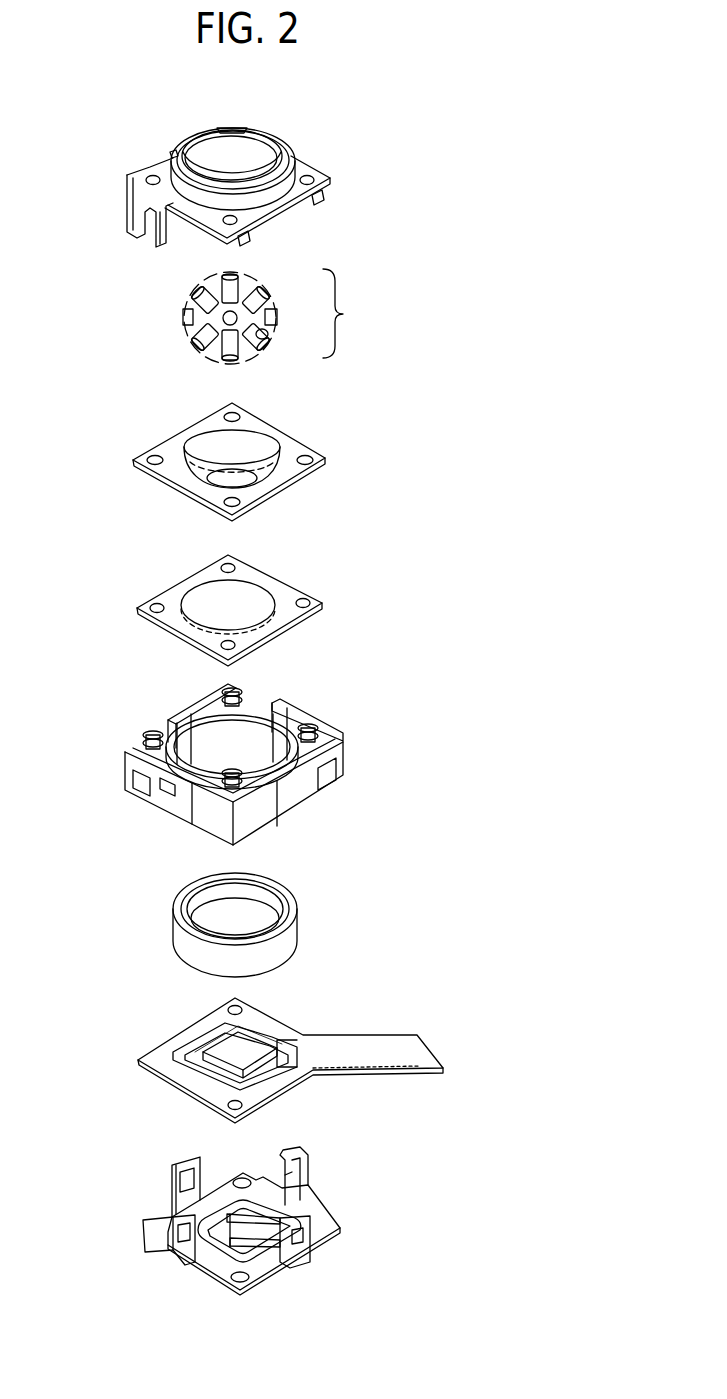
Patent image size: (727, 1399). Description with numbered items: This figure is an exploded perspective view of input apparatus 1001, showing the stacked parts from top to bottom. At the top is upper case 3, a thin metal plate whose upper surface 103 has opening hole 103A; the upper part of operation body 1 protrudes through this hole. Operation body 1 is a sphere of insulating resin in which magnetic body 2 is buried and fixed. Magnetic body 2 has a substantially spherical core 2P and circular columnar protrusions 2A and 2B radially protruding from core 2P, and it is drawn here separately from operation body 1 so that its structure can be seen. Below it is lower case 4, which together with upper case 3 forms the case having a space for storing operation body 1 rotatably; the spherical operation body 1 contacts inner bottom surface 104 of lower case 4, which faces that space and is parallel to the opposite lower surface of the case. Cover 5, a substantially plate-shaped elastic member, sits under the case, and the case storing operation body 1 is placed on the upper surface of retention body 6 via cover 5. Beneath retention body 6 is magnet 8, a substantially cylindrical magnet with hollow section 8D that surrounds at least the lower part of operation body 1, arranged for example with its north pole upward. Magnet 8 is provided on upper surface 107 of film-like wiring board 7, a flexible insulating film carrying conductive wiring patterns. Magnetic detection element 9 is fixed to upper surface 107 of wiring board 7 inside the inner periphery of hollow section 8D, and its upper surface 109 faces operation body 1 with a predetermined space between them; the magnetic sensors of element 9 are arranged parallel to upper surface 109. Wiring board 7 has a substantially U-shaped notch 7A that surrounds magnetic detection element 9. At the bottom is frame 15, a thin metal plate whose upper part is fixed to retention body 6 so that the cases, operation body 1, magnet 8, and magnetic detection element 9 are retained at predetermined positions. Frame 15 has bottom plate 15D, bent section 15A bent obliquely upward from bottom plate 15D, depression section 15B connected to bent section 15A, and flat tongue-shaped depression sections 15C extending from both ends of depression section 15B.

The input apparatus 1001 is at (451, 220).
The operation body 1 is at (190, 307).
The magnetic body 2 is at (233, 316).
The core 2P is at (250, 315).
The protrusion 2B is at (276, 316).
The protrusion 2A is at (256, 338).
The upper case 3 is at (244, 164).
The upper surface 103 is at (190, 140).
The opening hole 103A is at (236, 160).
The lower case 4 is at (259, 450).
The inner bottom surface 104 is at (232, 480).
The cover 5 is at (295, 592).
The retention body 6 is at (313, 745).
The magnet 8 is at (226, 915).
The hollow section 8D is at (226, 920).
The wiring board 7 is at (257, 1046).
The notch 7A is at (183, 1060).
The magnetic detection element 9 is at (221, 1045).
The upper surface 109 is at (237, 1043).
The upper surface 107 is at (380, 1045).
The frame 15 is at (247, 1213).
The bent section 15A is at (260, 1230).
The depression section 15B is at (212, 1230).
The depression section 15C is at (230, 1242).
The bottom plate 15D is at (328, 1232).